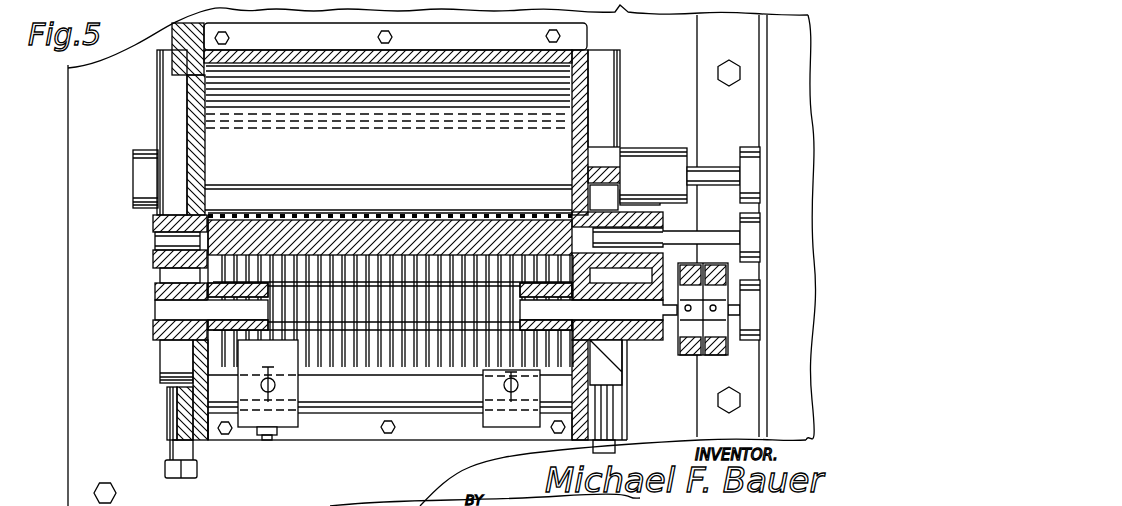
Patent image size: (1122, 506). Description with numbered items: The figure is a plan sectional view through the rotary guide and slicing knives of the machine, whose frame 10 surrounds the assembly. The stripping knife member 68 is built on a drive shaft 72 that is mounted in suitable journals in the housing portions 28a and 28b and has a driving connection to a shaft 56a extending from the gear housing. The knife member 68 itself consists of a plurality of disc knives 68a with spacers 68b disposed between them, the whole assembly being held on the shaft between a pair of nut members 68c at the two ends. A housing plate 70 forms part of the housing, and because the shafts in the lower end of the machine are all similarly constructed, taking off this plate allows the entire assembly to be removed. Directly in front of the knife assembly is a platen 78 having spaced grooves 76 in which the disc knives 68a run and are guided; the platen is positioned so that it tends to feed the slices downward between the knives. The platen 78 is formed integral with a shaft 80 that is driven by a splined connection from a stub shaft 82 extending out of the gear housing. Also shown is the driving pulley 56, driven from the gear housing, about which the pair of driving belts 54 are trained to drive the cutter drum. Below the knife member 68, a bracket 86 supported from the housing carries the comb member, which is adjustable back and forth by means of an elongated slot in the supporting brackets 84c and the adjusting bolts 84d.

The frame 10 is at (776, 25).
The housing 28a is at (192, 108).
The housing 28b is at (580, 80).
The driving belts 54 is at (693, 352).
The driving pulley 56 is at (700, 292).
The shaft 56a is at (733, 310).
The stripping knife member 68 is at (203, 400).
The disc knives 68a is at (197, 277).
The spacers 68b is at (207, 340).
The nut members 68c is at (165, 332).
The housing plate 70 is at (213, 345).
The drive shaft 72 is at (167, 307).
The spaced grooves 76 is at (250, 212).
The platen 78 is at (197, 240).
The shaft 80 is at (598, 232).
The stub shaft 82 is at (725, 235).
The supporting brackets 84c is at (252, 420).
The adjusting bolts 84d is at (272, 437).
The bracket 86 is at (360, 392).